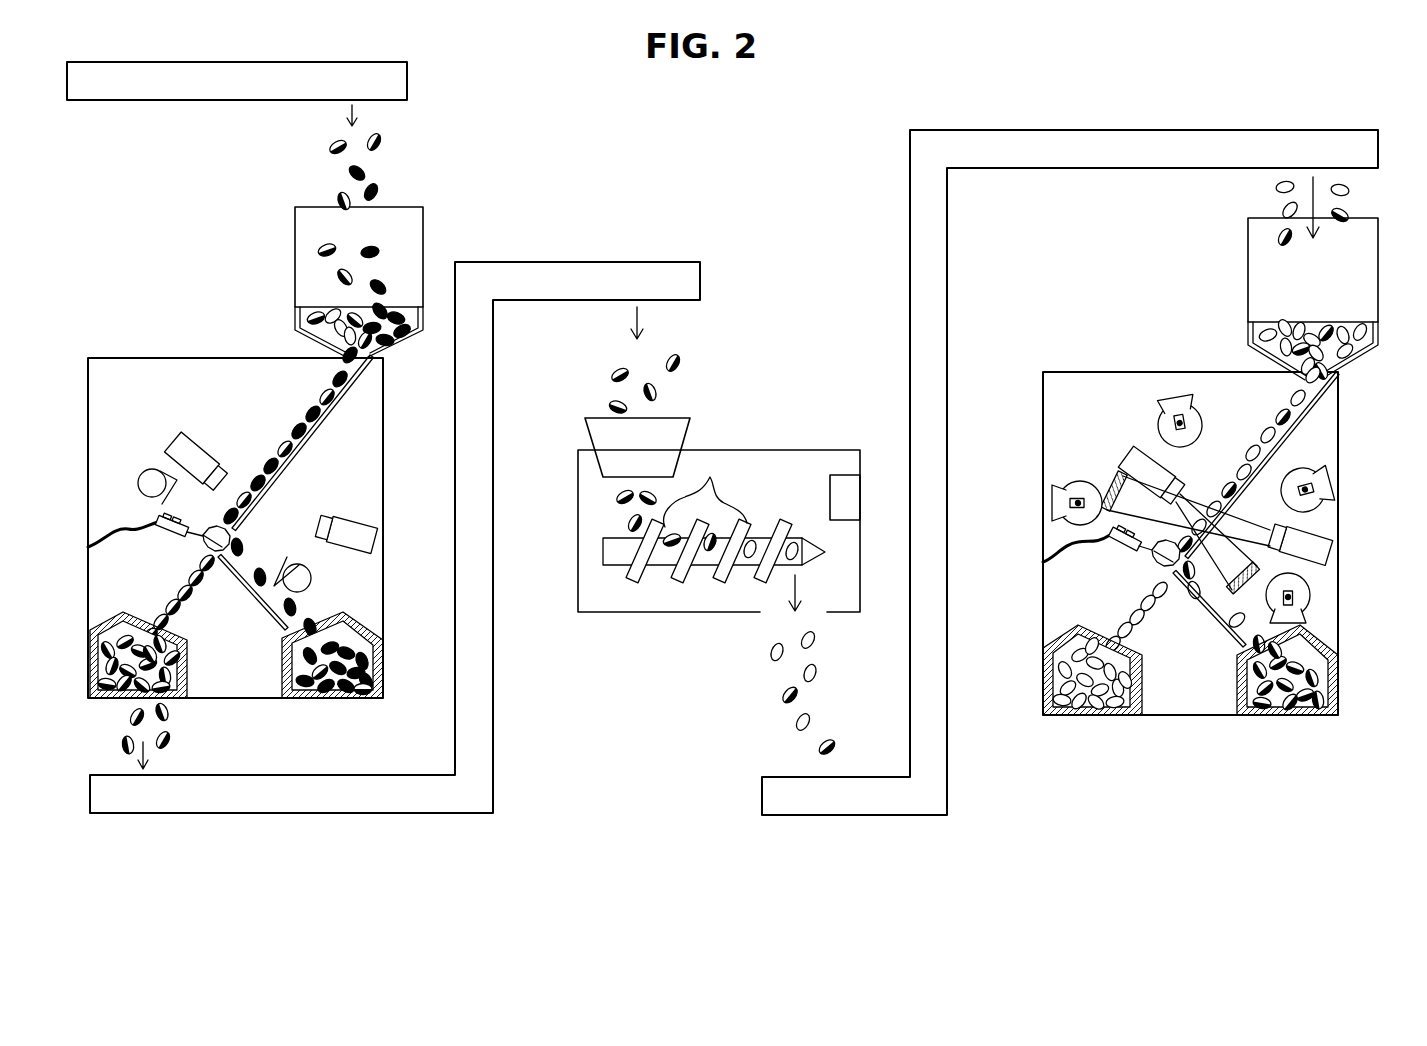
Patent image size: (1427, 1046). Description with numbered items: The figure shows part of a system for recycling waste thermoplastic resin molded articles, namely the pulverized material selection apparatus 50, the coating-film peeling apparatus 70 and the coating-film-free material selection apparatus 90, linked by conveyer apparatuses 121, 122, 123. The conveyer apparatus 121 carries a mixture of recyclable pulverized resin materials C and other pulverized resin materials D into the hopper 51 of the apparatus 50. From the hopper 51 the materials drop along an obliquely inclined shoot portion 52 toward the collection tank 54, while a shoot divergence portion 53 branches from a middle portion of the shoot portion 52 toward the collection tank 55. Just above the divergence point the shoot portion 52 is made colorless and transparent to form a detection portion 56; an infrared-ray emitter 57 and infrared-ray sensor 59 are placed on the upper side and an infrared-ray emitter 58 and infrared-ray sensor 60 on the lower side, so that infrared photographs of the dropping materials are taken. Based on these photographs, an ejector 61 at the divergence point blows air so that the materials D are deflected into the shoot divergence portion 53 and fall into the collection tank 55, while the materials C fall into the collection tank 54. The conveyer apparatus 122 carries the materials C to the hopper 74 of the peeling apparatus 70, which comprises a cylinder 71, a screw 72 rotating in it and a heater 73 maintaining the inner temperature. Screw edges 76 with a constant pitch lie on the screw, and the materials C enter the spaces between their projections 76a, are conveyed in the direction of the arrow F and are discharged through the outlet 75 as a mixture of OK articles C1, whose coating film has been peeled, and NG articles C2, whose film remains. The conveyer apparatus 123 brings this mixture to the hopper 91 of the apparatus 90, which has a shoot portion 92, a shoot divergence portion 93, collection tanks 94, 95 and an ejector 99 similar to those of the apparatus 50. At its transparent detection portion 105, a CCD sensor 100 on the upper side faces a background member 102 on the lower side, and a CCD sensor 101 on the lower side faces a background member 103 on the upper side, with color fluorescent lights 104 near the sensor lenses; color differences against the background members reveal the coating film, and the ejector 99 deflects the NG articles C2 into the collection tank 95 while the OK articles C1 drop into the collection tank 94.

The conveyer apparatus 121 is at (205, 100).
The conveyer apparatus 122 is at (322, 814).
The conveyer apparatus 123 is at (858, 815).
The pulverized material selection apparatus 50 is at (141, 324).
The hopper 51 is at (295, 240).
The shoot portion 52 is at (347, 395).
The shoot divergence portion 53 is at (237, 597).
The collection tank 54 is at (187, 668).
The collection tank 55 is at (386, 672).
The detection portion 56 is at (294, 500).
The infrared-ray emitter 57 is at (150, 473).
The infrared-ray emitter 58 is at (310, 584).
The infrared-ray sensor 59 is at (184, 444).
The infrared-ray sensor 60 is at (378, 535).
The ejector 61 is at (158, 525).
The coating-film peeling apparatus 70 is at (808, 343).
The cylinder 71 is at (806, 450).
The screw 72 is at (607, 554).
The heater 73 is at (860, 498).
The hopper 74 is at (690, 422).
The outlet 75 is at (828, 624).
The screw edges 76 is at (631, 578).
The projections 76a is at (710, 504).
The coating-film-free material selection apparatus 90 is at (1140, 335).
The hopper 91 is at (1248, 243).
The shoot portion 92 is at (1297, 410).
The shoot divergence portion 93 is at (1199, 596).
The collection tank 94 is at (1043, 676).
The collection tank 95 is at (1310, 715).
The ejector 99 is at (1107, 540).
The CCD sensor 100 is at (1132, 460).
The CCD sensor 101 is at (1334, 551).
The background member 102 is at (1243, 584).
The background member 103 is at (1110, 485).
The color fluorescent lights 104 is at (1054, 502).
The detection portion 105 is at (1209, 490).
The pulverized resin materials for recycling C is at (268, 457).
The other pulverized resin materials D is at (307, 410).
The OK article C1 is at (826, 553).
The NG article C2 is at (666, 571).
The arrow F is at (745, 603).